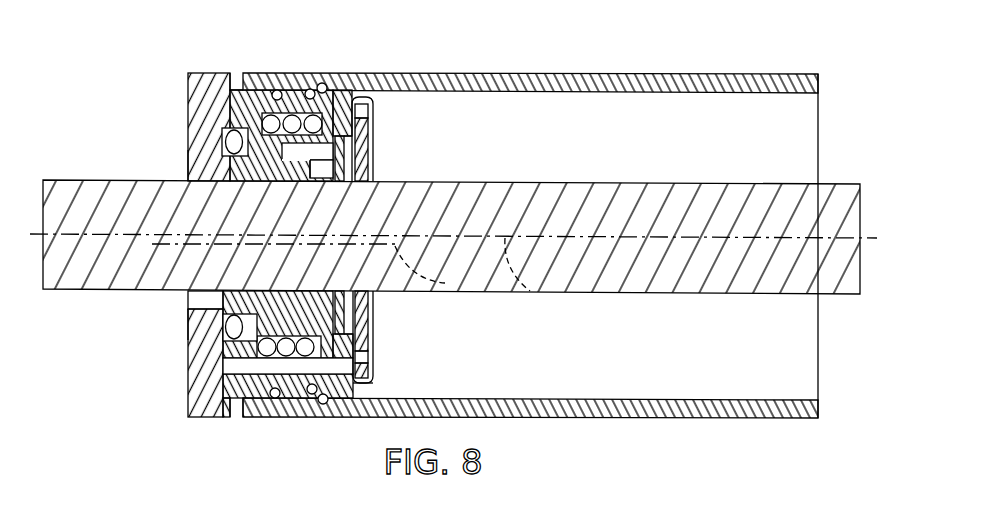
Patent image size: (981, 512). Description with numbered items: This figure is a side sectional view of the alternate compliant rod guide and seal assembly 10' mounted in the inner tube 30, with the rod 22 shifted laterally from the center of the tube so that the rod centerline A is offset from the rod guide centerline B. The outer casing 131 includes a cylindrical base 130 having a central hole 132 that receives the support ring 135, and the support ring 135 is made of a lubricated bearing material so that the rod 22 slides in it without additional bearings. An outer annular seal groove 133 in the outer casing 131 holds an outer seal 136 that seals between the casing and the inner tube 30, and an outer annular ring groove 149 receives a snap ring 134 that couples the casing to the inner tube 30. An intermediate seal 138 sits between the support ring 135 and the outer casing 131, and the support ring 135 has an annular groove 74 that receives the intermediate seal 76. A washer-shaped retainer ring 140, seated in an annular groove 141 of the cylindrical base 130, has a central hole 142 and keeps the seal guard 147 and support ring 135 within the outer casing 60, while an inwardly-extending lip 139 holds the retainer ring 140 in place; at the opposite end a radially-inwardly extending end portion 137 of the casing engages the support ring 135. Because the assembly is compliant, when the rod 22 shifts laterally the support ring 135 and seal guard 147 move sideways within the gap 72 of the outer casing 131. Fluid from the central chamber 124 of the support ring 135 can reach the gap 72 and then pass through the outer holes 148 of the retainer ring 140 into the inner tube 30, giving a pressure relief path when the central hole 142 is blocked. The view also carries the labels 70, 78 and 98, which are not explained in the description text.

The compliant rod guide and seal assembly 10' is at (189, 93).
The rod 22 is at (618, 183).
The inner tube 30 is at (598, 73).
The outer casing 60 is at (190, 405).
The seal body 70 is at (234, 88).
The gap 72 is at (216, 402).
The annular groove 74 is at (293, 183).
The intermediate seal 76 is at (290, 300).
The bearing ring 78 is at (312, 300).
The O-ring 98 is at (267, 400).
The central chamber 124 is at (200, 262).
The cylindrical base 130 is at (190, 380).
The outer casing 131 is at (200, 72).
The central hole 132 is at (375, 330).
The outer annular seal groove 133 is at (275, 400).
The snap ring 134 is at (313, 89).
The support ring 135 is at (190, 318).
The outer seal 136 is at (268, 90).
The radially-inwardly extending end portion 137 is at (188, 166).
The intermediate seal 138 is at (224, 139).
The inwardly-extending lip 139 is at (375, 378).
The retainer ring 140 is at (346, 165).
The annular groove 141 is at (375, 110).
The central hole 142 is at (358, 300).
The seal guard 147 is at (362, 96).
The outer holes 148 is at (374, 127).
The outer annular ring groove 149 is at (320, 83).
The rod centerline A is at (533, 293).
The rod guide centerline B is at (447, 285).